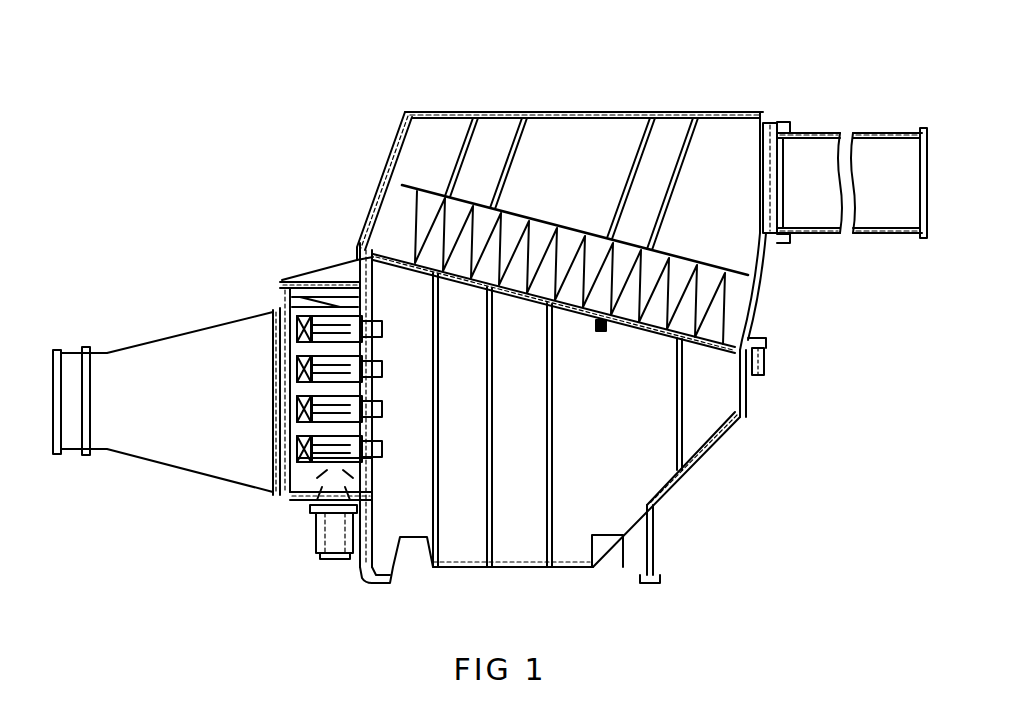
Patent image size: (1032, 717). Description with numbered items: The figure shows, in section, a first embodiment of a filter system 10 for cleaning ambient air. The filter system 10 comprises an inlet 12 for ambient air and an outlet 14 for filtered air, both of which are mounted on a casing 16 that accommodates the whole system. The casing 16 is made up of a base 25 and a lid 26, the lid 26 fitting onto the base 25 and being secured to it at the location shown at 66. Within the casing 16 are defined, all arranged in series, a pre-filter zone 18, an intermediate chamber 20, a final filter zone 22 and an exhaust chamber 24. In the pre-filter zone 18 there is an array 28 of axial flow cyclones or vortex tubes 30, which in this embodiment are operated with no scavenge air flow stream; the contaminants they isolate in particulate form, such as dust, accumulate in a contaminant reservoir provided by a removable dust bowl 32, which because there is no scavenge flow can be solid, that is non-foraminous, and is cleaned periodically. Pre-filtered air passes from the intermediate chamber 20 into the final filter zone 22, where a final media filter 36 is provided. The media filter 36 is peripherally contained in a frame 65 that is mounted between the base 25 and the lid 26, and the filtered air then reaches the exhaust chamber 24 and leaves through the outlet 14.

The filter system 10 is at (275, 125).
The inlet 12 is at (203, 305).
The outlet 14 is at (852, 104).
The casing 16 is at (814, 389).
The pre-filter zone 18 is at (290, 492).
The intermediate chamber 20 is at (518, 532).
The final filter zone 22 is at (606, 330).
The exhaust chamber 24 is at (525, 147).
The base 25 is at (712, 446).
The lid 26 is at (590, 111).
The array 28 is at (325, 298).
The vortex tubes 30 is at (292, 448).
The dust bowl 32 is at (305, 530).
The final media filter 36 is at (579, 285).
The frame 65 is at (388, 203).
The securing of lid to base 66 is at (775, 342).